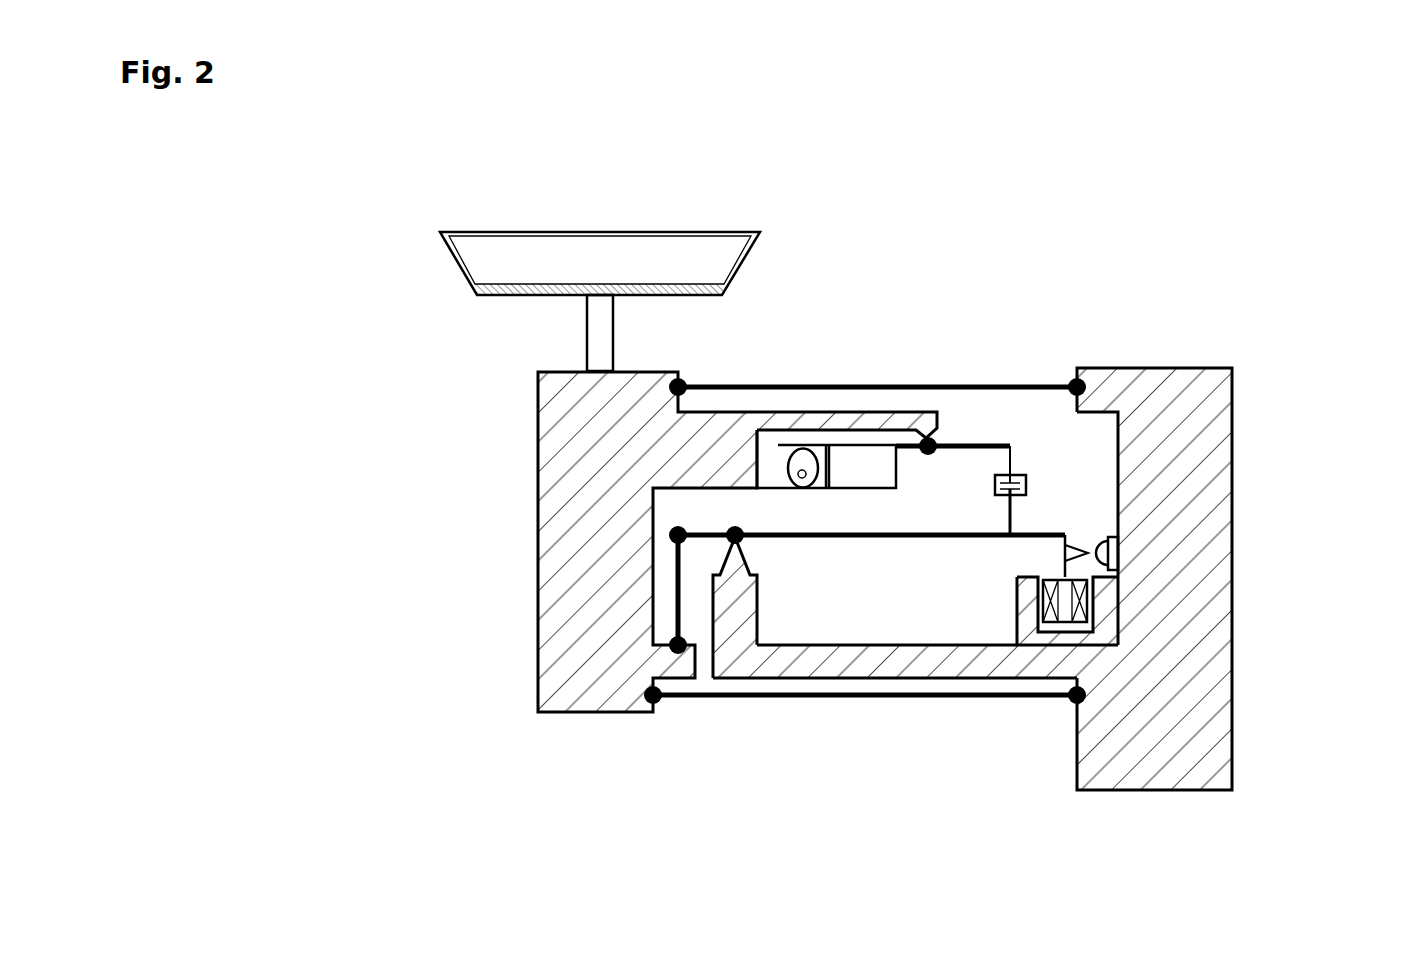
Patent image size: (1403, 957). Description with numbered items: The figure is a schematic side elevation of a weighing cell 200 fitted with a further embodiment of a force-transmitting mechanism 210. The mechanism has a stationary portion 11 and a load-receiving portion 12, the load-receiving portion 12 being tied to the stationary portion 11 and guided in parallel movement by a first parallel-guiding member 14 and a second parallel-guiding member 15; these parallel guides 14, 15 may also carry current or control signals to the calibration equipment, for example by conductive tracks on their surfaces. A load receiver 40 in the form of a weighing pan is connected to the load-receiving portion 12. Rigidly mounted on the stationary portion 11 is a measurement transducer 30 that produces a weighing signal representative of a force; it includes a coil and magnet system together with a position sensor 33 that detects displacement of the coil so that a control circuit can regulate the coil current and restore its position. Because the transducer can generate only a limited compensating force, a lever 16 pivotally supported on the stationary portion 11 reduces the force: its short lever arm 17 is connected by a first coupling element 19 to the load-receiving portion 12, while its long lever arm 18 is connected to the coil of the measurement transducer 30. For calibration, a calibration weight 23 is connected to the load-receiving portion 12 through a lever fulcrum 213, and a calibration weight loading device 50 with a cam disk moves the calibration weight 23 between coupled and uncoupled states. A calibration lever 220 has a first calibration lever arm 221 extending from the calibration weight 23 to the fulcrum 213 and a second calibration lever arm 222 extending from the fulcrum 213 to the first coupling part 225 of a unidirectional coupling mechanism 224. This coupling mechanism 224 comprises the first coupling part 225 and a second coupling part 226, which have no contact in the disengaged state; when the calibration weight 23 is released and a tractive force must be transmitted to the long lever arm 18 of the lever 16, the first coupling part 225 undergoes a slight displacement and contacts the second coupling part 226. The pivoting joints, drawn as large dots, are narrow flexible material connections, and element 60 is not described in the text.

The stationary portion 11 is at (1183, 747).
The load-receiving portion 12 is at (611, 689).
The first parallel-guiding member 14 is at (1036, 410).
The second parallel-guiding member 15 is at (800, 678).
The lever 16 is at (855, 560).
The short lever arm 17 is at (707, 538).
The long lever arm 18 is at (953, 540).
The first coupling element 19 is at (678, 597).
The calibration weight 23 is at (876, 479).
The measurement transducer 30 is at (1133, 608).
The position sensor 33 is at (1097, 530).
The load receiver 40 is at (616, 266).
The calibration weight loading device 50 is at (778, 467).
The upper conductor line 60 is at (1080, 380).
The weighing cell 200 is at (1160, 305).
The force-transmitting mechanism 210 is at (603, 752).
The lever fulcrum 213 is at (952, 425).
The calibration lever 220 is at (931, 490).
The first calibration lever arm 221 is at (906, 435).
The second calibration lever arm 222 is at (988, 442).
The unidirectional coupling mechanism 224 is at (1047, 485).
The first coupling part 225 is at (1013, 464).
The second coupling part 226 is at (1013, 516).